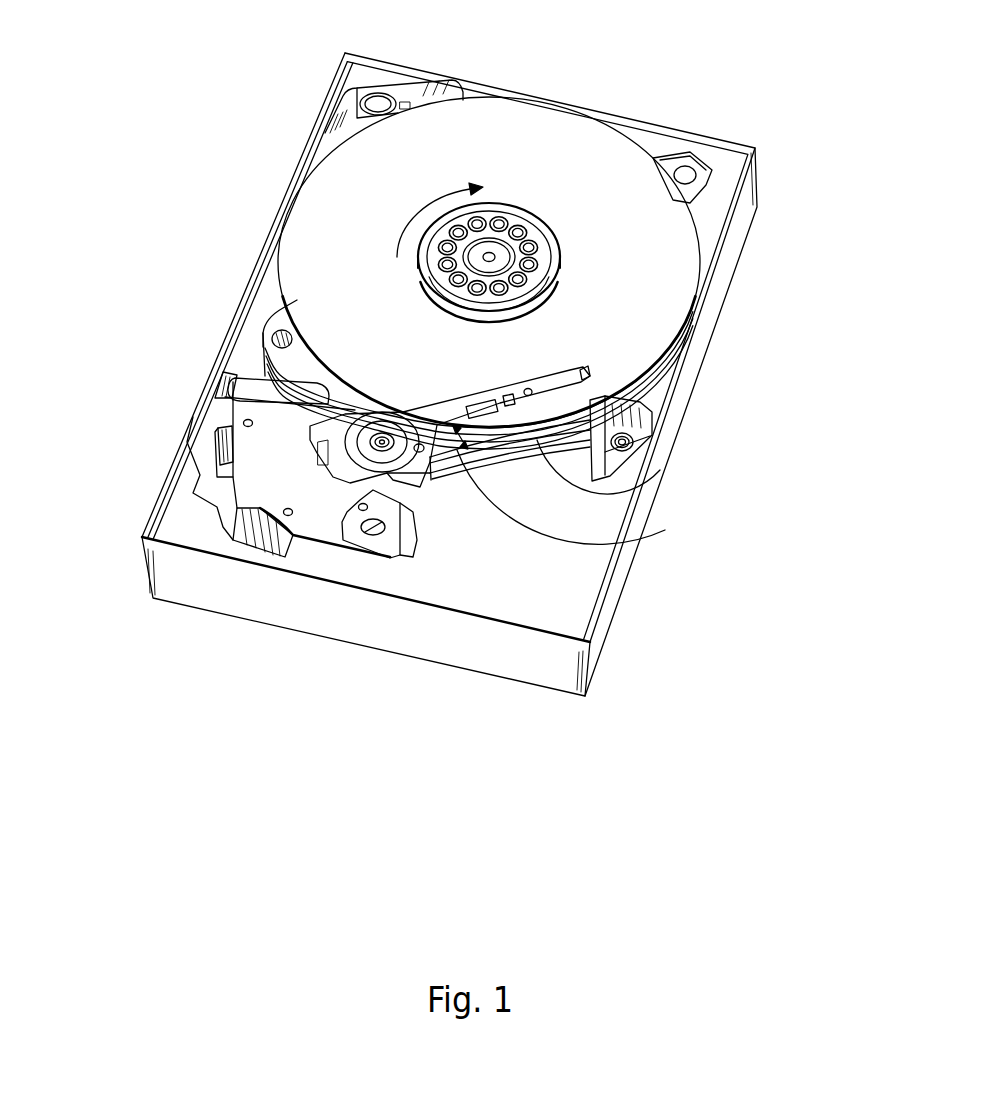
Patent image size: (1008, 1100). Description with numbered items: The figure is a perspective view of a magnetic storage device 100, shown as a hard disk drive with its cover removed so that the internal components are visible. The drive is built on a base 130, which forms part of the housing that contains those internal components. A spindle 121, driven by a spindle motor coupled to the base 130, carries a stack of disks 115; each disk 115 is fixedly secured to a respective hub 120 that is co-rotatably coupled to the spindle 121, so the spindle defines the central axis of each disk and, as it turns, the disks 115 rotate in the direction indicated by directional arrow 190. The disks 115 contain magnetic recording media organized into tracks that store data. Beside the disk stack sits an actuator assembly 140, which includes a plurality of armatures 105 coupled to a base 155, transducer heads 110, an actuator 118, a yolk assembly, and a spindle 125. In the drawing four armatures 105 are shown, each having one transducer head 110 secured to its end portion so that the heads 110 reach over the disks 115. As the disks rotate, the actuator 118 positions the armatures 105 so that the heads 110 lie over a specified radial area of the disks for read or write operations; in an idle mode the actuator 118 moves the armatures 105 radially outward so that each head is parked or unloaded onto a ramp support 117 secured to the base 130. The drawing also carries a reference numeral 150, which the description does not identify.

The magnetic storage device 100 is at (632, 100).
The armatures 105 is at (472, 402).
The transducer heads 110 is at (585, 377).
The disks 115 is at (637, 365).
The ramp support 117 is at (612, 465).
The actuator 118 is at (247, 465).
The hubs 120 is at (550, 280).
The spindle 121 is at (488, 255).
The spindle 125 is at (240, 395).
The base 130 is at (657, 402).
The actuator assembly 140 is at (436, 474).
The arc / path 150 is at (665, 530).
The base 155 is at (392, 483).
The directional arrow 190 is at (405, 228).